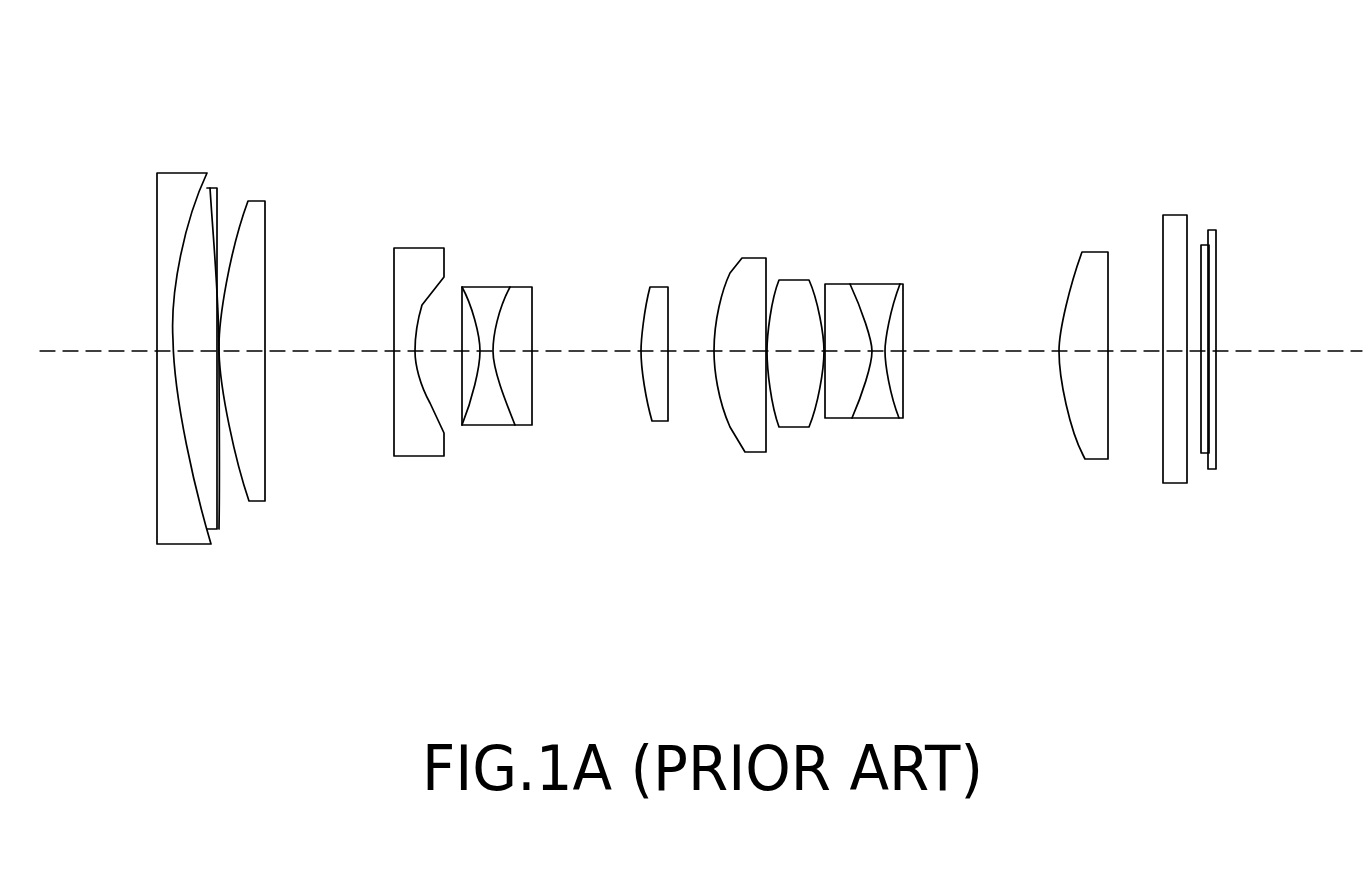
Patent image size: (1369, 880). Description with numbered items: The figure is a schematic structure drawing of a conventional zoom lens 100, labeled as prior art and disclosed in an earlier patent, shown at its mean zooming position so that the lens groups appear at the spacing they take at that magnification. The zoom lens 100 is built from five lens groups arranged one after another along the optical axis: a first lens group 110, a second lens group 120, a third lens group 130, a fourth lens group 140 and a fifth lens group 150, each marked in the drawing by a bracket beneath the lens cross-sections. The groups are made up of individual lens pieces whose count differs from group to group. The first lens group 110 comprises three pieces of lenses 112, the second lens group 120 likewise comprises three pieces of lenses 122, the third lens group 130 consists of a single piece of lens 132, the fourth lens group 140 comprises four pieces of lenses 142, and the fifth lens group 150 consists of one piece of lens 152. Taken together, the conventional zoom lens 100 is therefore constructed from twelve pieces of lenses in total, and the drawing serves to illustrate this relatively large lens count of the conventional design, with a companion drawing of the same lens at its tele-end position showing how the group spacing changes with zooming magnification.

The zoom lens 100 is at (628, 377).
The first lens group 110 is at (210, 347).
The lenses 112 is at (257, 212).
The second lens group 120 is at (456, 347).
The lenses 122 is at (522, 298).
The third lens group 130 is at (654, 347).
The lens 132 is at (658, 308).
The fourth lens group 140 is at (818, 347).
The lenses 142 is at (881, 295).
The fifth lens group 150 is at (1081, 347).
The lens 152 is at (1090, 272).